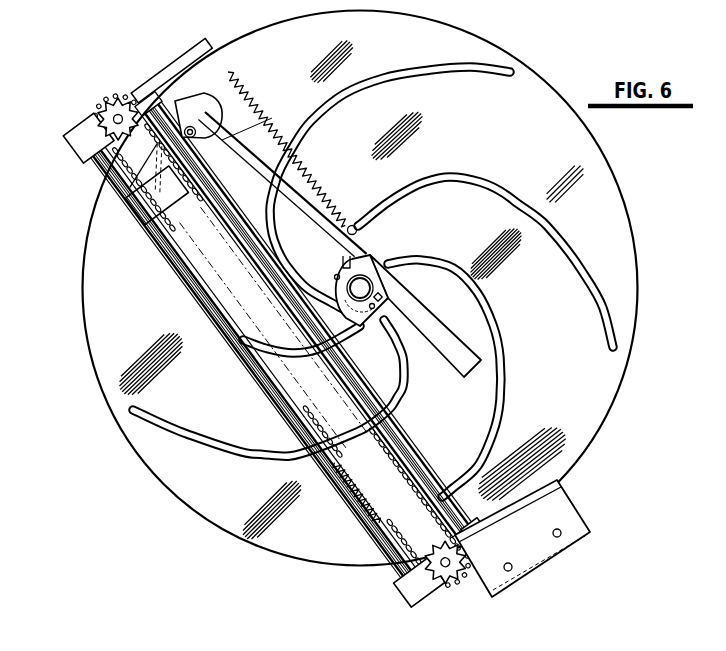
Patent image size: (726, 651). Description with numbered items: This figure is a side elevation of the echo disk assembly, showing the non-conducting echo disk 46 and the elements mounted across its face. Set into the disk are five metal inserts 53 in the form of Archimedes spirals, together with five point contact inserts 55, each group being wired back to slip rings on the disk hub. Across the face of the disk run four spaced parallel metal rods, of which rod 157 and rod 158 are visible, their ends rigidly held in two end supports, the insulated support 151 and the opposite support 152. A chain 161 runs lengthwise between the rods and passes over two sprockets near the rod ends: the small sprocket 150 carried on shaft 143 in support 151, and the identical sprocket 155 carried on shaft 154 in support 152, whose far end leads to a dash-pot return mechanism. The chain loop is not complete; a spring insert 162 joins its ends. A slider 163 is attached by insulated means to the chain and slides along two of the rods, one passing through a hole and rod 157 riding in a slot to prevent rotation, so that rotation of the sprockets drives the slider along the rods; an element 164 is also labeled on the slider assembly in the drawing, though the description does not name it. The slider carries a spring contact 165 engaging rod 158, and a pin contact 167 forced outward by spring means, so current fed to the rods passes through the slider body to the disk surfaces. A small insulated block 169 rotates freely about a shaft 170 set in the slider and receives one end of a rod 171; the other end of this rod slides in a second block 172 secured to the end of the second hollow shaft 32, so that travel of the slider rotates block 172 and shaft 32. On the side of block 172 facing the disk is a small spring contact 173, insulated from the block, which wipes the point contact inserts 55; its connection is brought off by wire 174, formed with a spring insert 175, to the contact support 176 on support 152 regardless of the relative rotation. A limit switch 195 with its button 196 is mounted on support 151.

The second hollow shaft 32 is at (367, 282).
The echo disk 46 is at (197, 495).
The metal inserts 53 is at (447, 175).
The point contact inserts 55 is at (335, 276).
The shaft 143 is at (462, 572).
The small sprocket 150 is at (444, 577).
The insulated support 151 is at (402, 582).
The support 152 is at (77, 153).
The shaft 154 is at (100, 107).
The sprocket 155 is at (118, 115).
The metal rod 157 is at (393, 433).
The metal rod 158 is at (275, 400).
The chain 161 is at (317, 463).
The spring insert 162 is at (350, 507).
The slider 163 is at (223, 180).
The bracket 164 is at (165, 205).
The spring contact 165 is at (140, 183).
The pin contact 167 is at (172, 105).
The small insulated block 169 is at (203, 97).
The shaft 170 is at (261, 124).
The rod 171 is at (330, 227).
The second block 172 is at (460, 367).
The small spring contact 173 is at (358, 320).
The wire 174 is at (356, 229).
The spring insert 175 is at (247, 102).
The contact support 176 is at (180, 63).
The limit switch 195 is at (542, 550).
The button 196 is at (490, 524).